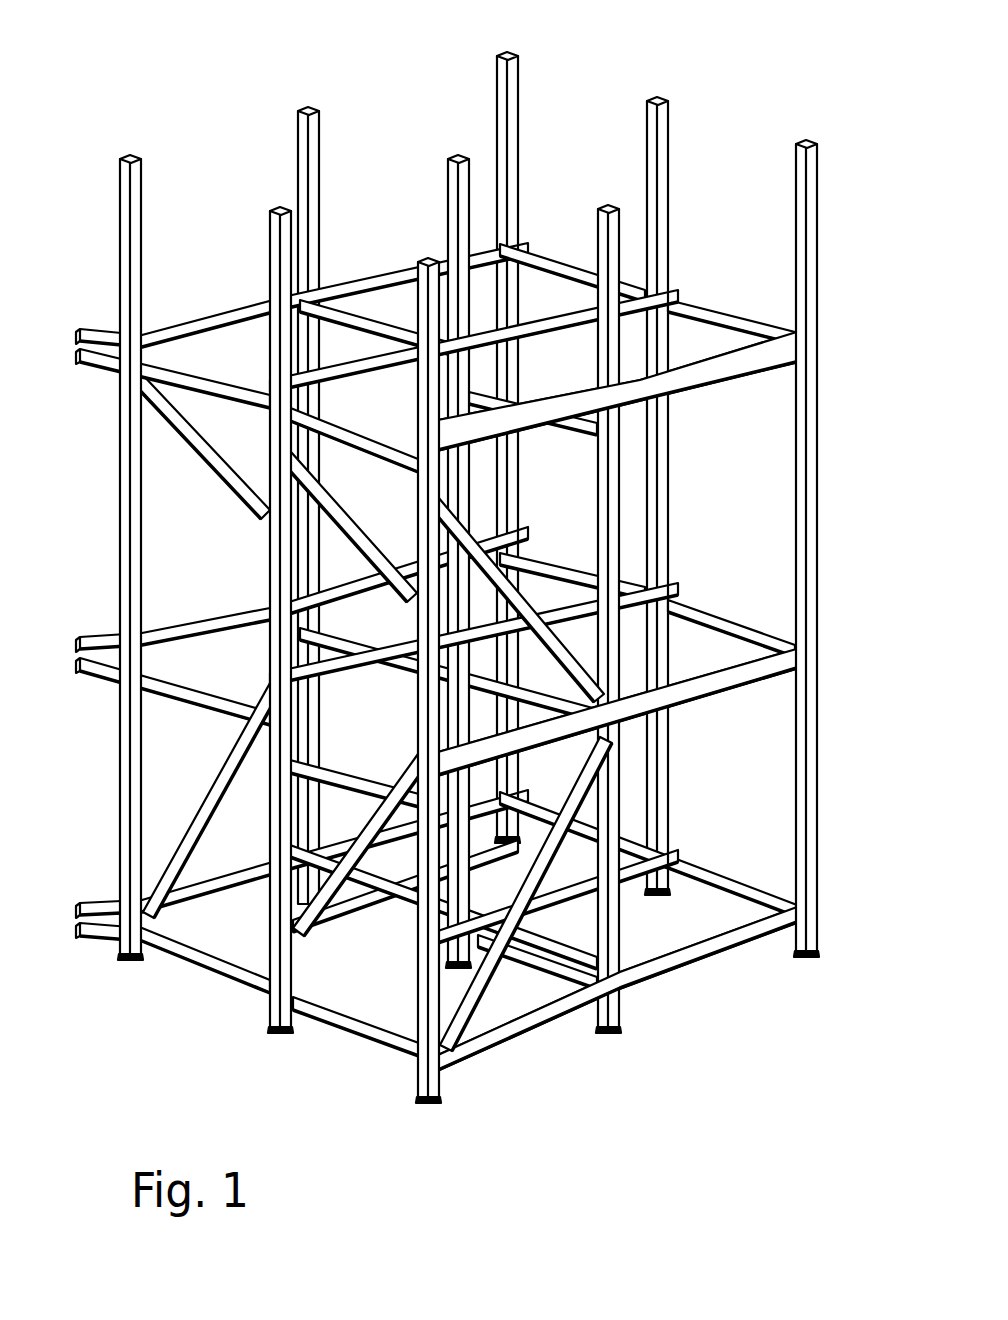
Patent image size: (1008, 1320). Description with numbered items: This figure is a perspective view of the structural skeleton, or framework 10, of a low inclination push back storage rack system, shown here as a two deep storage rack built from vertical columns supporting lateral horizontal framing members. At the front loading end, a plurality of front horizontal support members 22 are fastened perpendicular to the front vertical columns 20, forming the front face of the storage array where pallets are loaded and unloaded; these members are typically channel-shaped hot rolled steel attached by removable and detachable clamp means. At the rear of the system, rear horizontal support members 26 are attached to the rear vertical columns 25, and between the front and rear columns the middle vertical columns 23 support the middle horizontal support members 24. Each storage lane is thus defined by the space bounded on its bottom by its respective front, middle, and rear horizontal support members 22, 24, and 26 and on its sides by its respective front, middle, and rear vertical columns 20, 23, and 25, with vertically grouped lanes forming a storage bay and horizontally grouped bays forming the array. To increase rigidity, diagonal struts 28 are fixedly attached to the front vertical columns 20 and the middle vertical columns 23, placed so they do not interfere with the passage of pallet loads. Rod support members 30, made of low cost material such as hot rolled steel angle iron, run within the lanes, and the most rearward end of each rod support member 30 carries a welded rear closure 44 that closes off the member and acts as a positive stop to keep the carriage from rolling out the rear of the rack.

The framework 10 is at (487, 584).
The front vertical columns 20 is at (272, 580).
The front horizontal support members 22 is at (170, 688).
The middle vertical columns 23 is at (648, 245).
The middle horizontal support members 24 is at (380, 330).
The rear vertical columns 25 is at (818, 838).
The rear horizontal support members 26 is at (712, 310).
The diagonal struts 28 is at (473, 584).
The rod support members 30 is at (712, 678).
The rear closure 44 is at (530, 248).